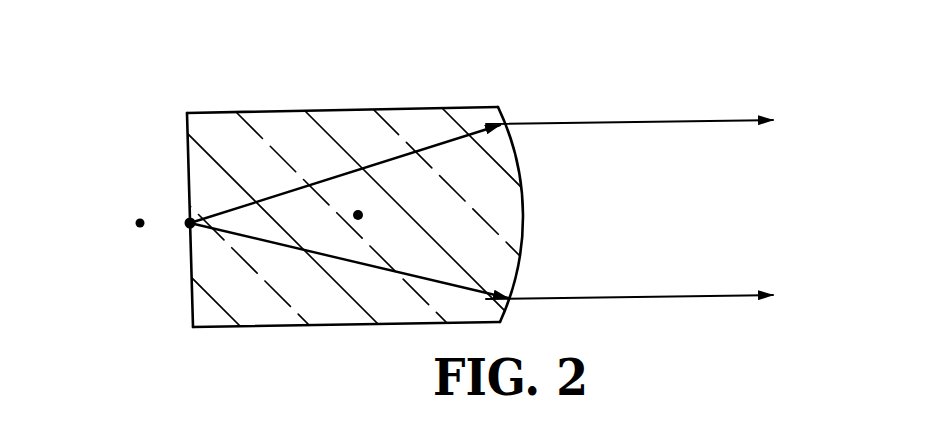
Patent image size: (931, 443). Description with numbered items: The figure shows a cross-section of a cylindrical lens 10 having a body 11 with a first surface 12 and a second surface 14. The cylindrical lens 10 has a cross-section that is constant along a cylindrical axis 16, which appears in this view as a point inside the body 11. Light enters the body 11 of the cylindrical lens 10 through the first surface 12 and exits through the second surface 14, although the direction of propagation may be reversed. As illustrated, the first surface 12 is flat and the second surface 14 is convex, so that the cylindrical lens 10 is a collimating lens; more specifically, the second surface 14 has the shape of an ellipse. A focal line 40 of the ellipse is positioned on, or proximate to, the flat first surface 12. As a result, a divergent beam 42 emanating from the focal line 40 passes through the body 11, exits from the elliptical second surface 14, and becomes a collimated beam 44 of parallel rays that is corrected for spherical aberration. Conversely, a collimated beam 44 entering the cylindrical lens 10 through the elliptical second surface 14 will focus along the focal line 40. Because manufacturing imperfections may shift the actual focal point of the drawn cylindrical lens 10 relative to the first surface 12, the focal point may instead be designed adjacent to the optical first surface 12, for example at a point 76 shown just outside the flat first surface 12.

The cylindrical lens 10 is at (351, 184).
The body 11 is at (303, 112).
The first surface 12 is at (190, 275).
The second surface 14 is at (525, 198).
The cylindrical axis 16 is at (362, 214).
The focal line 40 is at (188, 222).
The divergent beam 42 is at (317, 223).
The collimated beam 44 is at (665, 223).
The point 76 is at (138, 227).